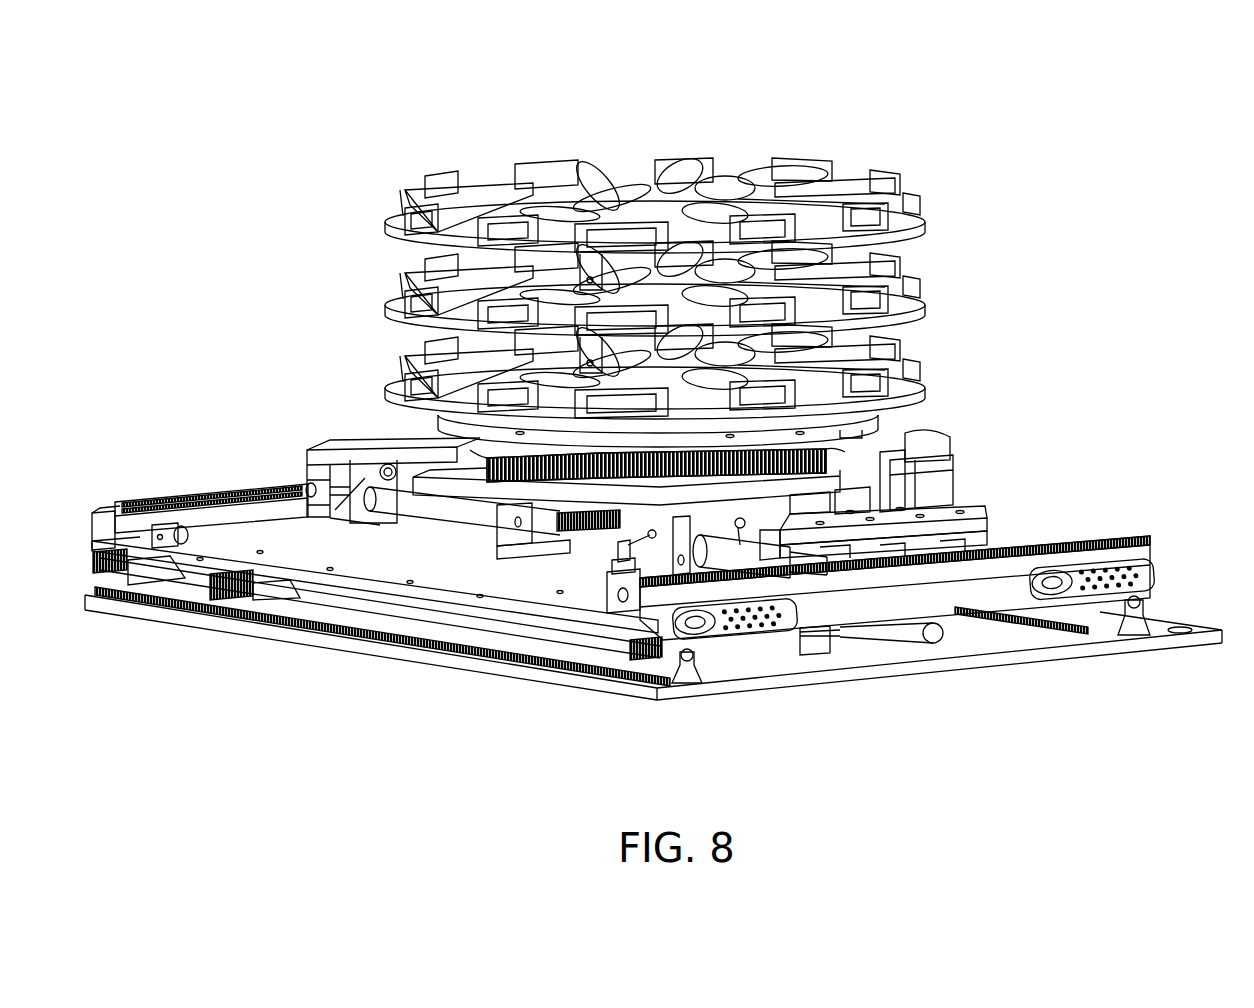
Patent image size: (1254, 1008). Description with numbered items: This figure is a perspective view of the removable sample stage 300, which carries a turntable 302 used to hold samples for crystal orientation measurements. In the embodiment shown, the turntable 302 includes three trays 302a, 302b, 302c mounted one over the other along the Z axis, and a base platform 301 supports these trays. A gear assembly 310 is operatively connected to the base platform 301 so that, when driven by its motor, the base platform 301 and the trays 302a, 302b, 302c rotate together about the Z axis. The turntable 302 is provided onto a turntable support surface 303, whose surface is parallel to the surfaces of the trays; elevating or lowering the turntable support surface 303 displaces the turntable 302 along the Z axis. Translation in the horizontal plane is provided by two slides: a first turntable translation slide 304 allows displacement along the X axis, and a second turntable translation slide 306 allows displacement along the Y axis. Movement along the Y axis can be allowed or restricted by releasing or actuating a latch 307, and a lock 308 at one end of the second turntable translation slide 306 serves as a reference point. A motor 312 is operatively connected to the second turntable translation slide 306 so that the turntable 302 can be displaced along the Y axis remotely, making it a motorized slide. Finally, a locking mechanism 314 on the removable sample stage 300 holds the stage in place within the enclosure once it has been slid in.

The removable sample stage 300 is at (238, 149).
The base platform 301 is at (455, 426).
The turntable 302 is at (348, 340).
The tray 302a is at (926, 217).
The tray 302b is at (926, 300).
The tray 302c is at (926, 383).
The turntable support surface 303 is at (330, 555).
The first turntable translation slide 304 is at (746, 553).
The second turntable translation slide 306 is at (1105, 540).
The latch 307 is at (942, 492).
The lock 308 is at (633, 598).
The gear assembly 310 is at (556, 477).
The motor 312 is at (940, 437).
The locking mechanism 314 is at (931, 642).